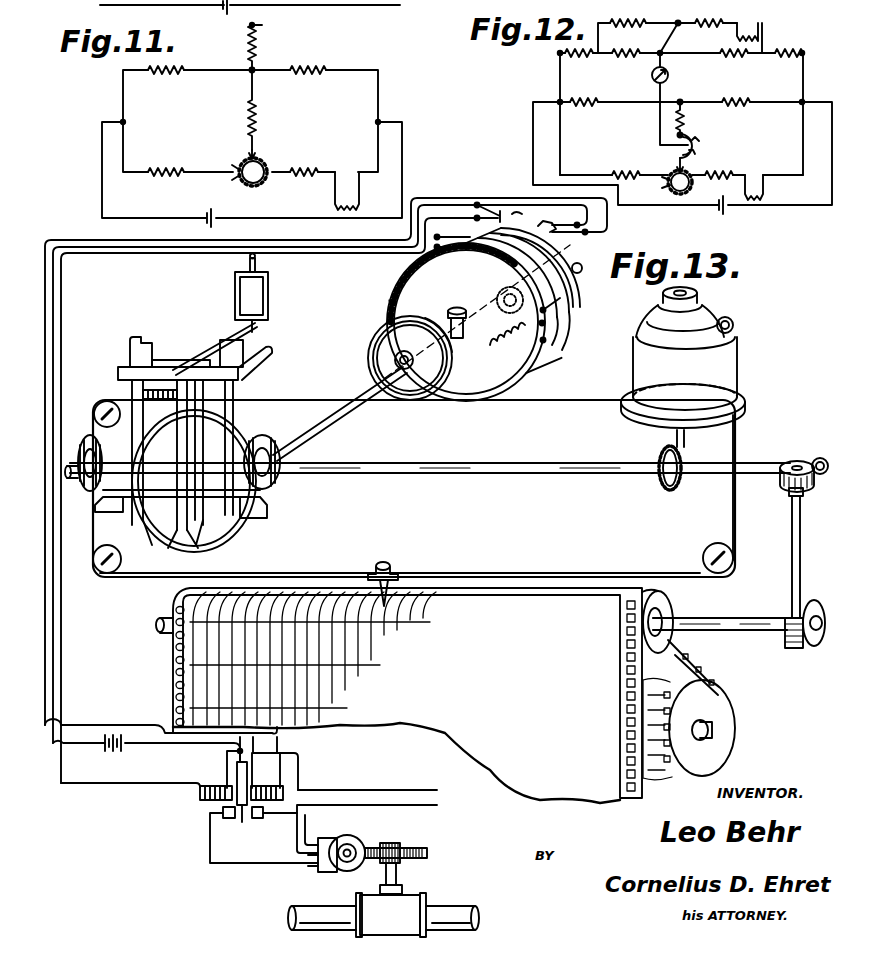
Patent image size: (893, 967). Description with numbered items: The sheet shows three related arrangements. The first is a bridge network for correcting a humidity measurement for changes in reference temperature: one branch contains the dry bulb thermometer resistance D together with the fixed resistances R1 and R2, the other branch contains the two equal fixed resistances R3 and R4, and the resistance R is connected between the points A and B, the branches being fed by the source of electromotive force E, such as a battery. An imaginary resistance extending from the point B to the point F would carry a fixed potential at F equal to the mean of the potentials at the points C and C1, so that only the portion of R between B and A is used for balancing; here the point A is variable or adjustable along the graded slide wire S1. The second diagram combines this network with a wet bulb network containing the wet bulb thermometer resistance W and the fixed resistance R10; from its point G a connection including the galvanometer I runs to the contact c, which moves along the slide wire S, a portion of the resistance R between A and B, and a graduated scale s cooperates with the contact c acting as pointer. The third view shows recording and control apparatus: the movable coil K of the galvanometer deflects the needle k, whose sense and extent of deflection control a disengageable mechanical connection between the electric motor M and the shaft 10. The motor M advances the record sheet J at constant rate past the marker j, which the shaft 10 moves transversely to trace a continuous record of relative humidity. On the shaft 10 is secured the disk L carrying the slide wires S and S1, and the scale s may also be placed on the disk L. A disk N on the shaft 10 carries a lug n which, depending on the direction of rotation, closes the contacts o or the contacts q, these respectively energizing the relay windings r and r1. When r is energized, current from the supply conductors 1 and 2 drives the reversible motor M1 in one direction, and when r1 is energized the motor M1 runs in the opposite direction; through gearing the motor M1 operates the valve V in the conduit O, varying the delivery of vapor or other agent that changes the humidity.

In FIG. 11, the point F is at (261, 42).
In FIG. 12, the point F is at (670, 53).
In FIG. 11, the point B is at (253, 69).
In FIG. 12, the point B is at (683, 100).
In FIG. 11, the resistance R is at (248, 118).
In FIG. 12, the resistance R is at (684, 118).
In FIG. 11, the fixed resistance R1 is at (168, 170).
In FIG. 12, the fixed resistance R1 is at (636, 172).
In FIG. 11, the fixed resistance R2 is at (305, 185).
In FIG. 12, the fixed resistance R2 is at (727, 172).
In FIG. 11, the fixed resistance R3 is at (150, 74).
In FIG. 11, the fixed resistance R4 is at (305, 67).
In FIG. 12, the fixed resistance R10 is at (784, 50).
In FIG. 11, the point A is at (248, 150).
In FIG. 12, the point A is at (677, 165).
In FIG. 11, the slide wire S1 is at (259, 158).
In FIG. 12, the slide wire S1 is at (670, 196).
In FIG. 13, the slide wire S1 is at (488, 250).
In FIG. 12, the slide wire S is at (700, 138).
In FIG. 13, the slide wire S is at (547, 320).
In FIG. 11, the thermometer resistance D is at (343, 175).
In FIG. 12, the thermometer resistance D is at (760, 180).
In FIG. 11, the source of electromotive force E is at (207, 214).
In FIG. 12, the source of electromotive force E is at (725, 212).
In FIG. 12, the point G is at (666, 26).
In FIG. 13, the point G is at (468, 240).
In FIG. 12, the wet bulb thermometer resistance W is at (746, 20).
In FIG. 12, the galvanometer I is at (669, 74).
In FIG. 12, the point C is at (804, 100).
In FIG. 12, the point C1 is at (558, 100).
In FIG. 13, the point C1 is at (391, 292).
In FIG. 12, the contact c is at (698, 138).
In FIG. 13, the contact c is at (484, 203).
In FIG. 12, the graduated scale s is at (708, 138).
In FIG. 13, the graduated scale s is at (390, 312).
In FIG. 13, the contacts q is at (520, 214).
In FIG. 13, the lug or cam element n is at (545, 221).
In FIG. 13, the contacts o is at (556, 225).
In FIG. 13, the disk N is at (580, 263).
In FIG. 13, the shaft or movable structure 10 is at (370, 392).
In FIG. 13, the disk L is at (508, 378).
In FIG. 13, the movable coil of the galvanometer K is at (268, 300).
In FIG. 13, the needle or pointer k is at (222, 334).
In FIG. 13, the electric motor M is at (738, 356).
In FIG. 13, the marker or pen j is at (380, 566).
In FIG. 13, the recording paper or sheet J is at (422, 732).
In FIG. 13, the supply circuit conductor 1 is at (424, 791).
In FIG. 13, the supply circuit conductor 2 is at (425, 806).
In FIG. 13, the relay winding r1 is at (214, 786).
In FIG. 13, the relay winding r is at (268, 790).
In FIG. 13, the reversible electric motor M1 is at (372, 830).
In FIG. 13, the valve V is at (392, 915).
In FIG. 13, the conduit O is at (452, 906).